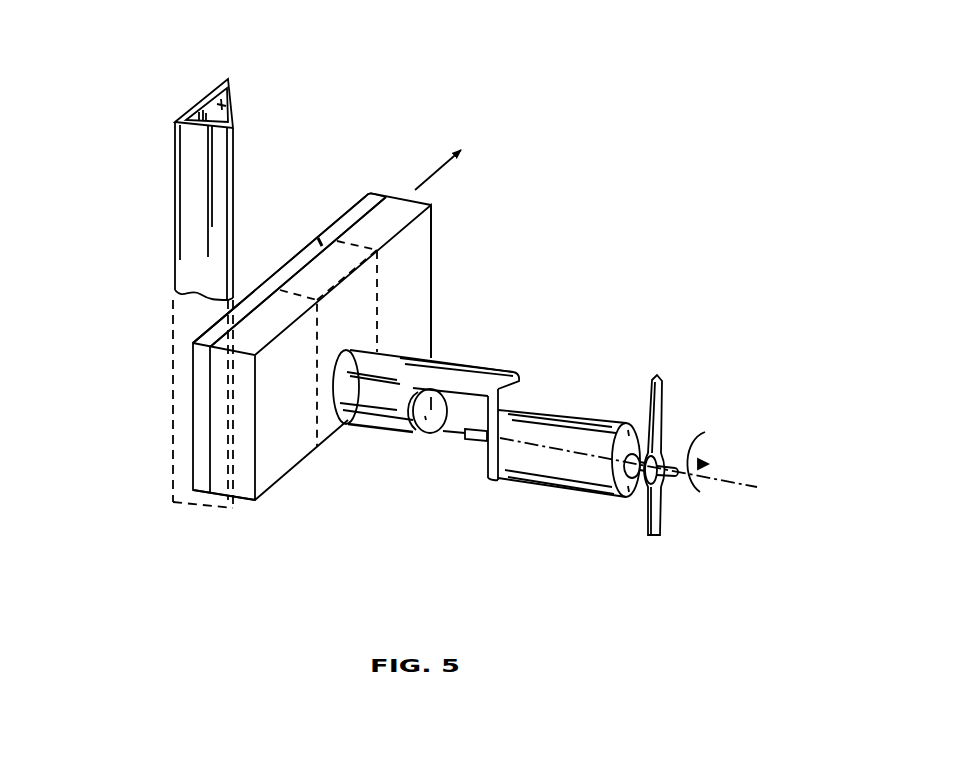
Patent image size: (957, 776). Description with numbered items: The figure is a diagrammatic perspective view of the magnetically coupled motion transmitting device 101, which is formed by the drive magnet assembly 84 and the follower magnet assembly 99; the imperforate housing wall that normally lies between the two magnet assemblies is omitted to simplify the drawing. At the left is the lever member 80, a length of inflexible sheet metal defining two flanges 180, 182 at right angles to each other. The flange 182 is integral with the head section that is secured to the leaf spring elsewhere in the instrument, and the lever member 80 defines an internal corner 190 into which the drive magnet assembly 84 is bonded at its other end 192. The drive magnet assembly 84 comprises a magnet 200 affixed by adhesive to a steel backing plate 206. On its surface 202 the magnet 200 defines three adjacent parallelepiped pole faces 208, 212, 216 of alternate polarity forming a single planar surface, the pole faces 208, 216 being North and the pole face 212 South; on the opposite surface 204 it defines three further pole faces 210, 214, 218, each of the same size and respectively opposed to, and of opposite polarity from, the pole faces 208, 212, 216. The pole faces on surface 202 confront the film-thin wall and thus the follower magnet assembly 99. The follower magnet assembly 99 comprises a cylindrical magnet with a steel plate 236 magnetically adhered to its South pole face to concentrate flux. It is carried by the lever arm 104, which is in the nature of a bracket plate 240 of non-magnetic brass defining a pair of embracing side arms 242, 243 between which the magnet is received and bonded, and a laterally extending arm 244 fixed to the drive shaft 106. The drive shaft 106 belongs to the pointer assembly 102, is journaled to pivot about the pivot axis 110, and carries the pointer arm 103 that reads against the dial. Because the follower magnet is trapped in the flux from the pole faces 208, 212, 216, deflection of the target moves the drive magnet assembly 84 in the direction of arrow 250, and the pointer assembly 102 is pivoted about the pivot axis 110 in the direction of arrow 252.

The lever member 80 is at (197, 290).
The flange 180 is at (241, 69).
The internal corner 190 is at (222, 105).
The flange 182 is at (183, 218).
The other end 192 is at (160, 435).
The drive magnet assembly 84 is at (197, 512).
The magnetically coupled motion transmitting device 101 is at (453, 334).
The surface 202 is at (313, 375).
The magnet 200 is at (217, 440).
The pole face 216 is at (258, 480).
The pole face 218 is at (237, 313).
The pole face 208 is at (413, 267).
The pole face 212 is at (355, 323).
The surface 204 is at (305, 222).
The backing plate 206 is at (273, 273).
The pole face 214 is at (297, 262).
The pole face 210 is at (360, 200).
The follower magnet assembly 99 is at (413, 454).
The side arm 242 is at (372, 400).
The side arm 243 is at (442, 421).
The steel plate 236 is at (430, 435).
The bracket plate 240 is at (503, 382).
The lever arm 104 is at (472, 360).
The laterally extending arm 244 is at (512, 398).
The drive shaft 106 is at (596, 504).
The pivot axis 110 is at (747, 483).
The pointer assembly 102 is at (704, 430).
The pointer arm 103 is at (657, 403).
The arrow 252 is at (705, 432).
The arrow 250 is at (440, 170).